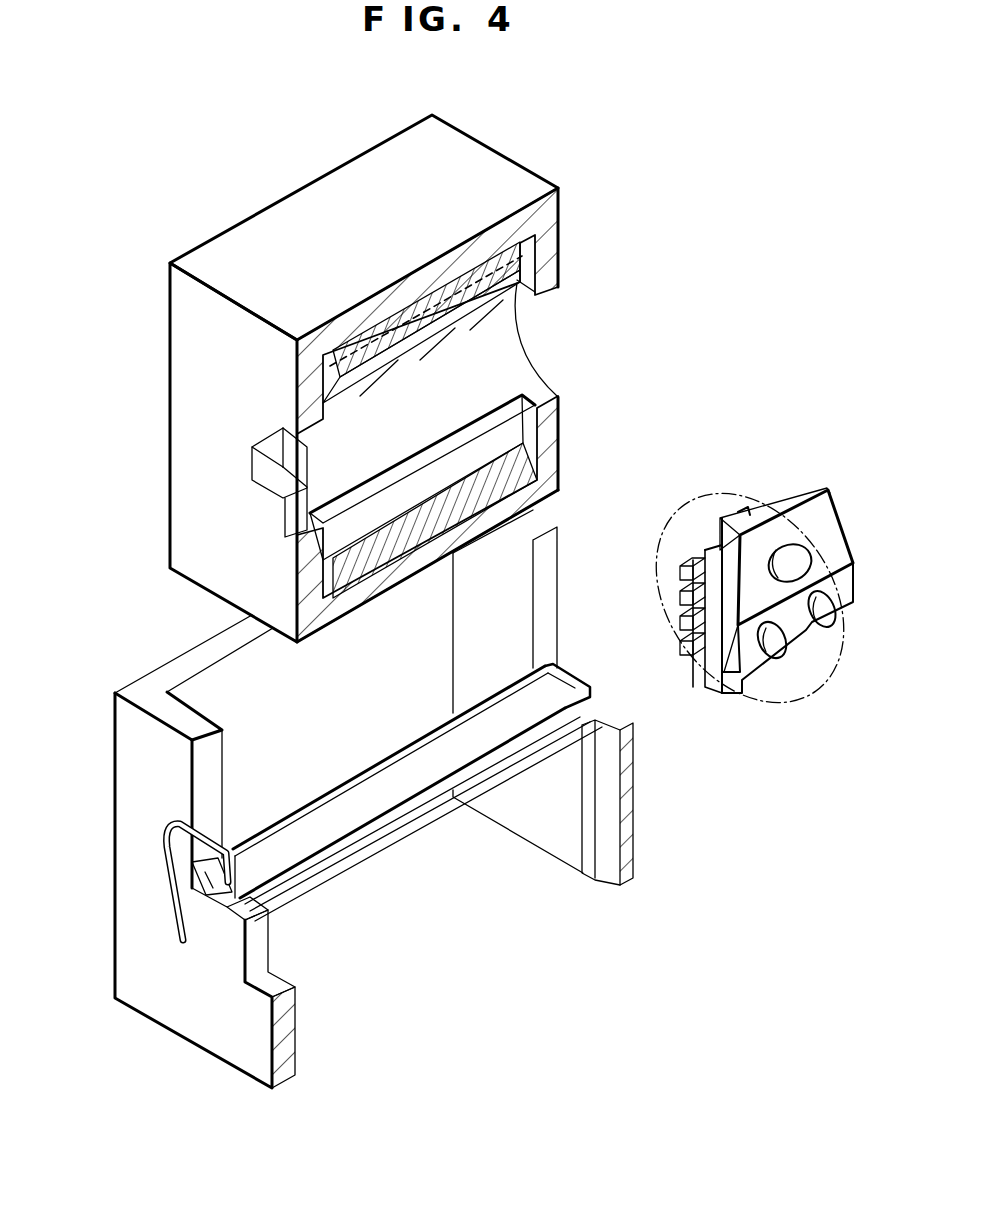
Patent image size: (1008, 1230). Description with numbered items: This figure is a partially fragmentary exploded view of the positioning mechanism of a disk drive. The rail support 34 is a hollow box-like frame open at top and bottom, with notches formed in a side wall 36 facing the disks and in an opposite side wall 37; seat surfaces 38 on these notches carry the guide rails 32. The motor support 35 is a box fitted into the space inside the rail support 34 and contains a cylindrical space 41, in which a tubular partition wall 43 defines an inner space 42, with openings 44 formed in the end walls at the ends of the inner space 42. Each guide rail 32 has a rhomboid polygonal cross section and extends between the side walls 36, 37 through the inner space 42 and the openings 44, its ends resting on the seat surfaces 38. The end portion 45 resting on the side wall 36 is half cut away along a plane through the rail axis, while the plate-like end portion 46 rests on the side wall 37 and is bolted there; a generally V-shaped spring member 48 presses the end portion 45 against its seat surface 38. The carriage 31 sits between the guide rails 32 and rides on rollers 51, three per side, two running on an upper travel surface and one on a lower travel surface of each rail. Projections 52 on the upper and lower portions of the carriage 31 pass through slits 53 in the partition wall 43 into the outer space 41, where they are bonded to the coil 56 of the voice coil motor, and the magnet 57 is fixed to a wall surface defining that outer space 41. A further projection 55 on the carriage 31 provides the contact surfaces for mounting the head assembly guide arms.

The carriage 31 is at (760, 605).
The guide rails 32 is at (335, 800).
The rail support 34 is at (350, 785).
The motor support 35 is at (406, 386).
The side wall 36 is at (192, 1040).
The side wall 37 is at (560, 557).
The seat surfaces 38 is at (587, 693).
The cylindrical space 41 is at (507, 450).
The inner space 42 is at (432, 370).
The tubular partition wall 43 is at (558, 418).
The openings 44 is at (273, 490).
The end portion 45 is at (208, 892).
The end portion 46 is at (560, 673).
The spring member 48 is at (160, 845).
The rollers 51 is at (830, 603).
The projections 52 is at (763, 527).
The slits 53 is at (556, 258).
The projection 55 is at (683, 627).
The coil 56 is at (823, 663).
The magnet 57 is at (360, 357).